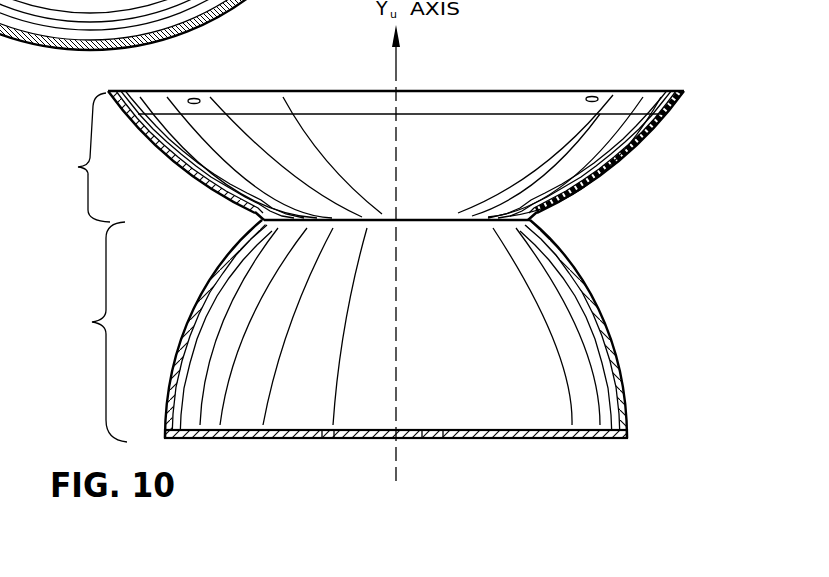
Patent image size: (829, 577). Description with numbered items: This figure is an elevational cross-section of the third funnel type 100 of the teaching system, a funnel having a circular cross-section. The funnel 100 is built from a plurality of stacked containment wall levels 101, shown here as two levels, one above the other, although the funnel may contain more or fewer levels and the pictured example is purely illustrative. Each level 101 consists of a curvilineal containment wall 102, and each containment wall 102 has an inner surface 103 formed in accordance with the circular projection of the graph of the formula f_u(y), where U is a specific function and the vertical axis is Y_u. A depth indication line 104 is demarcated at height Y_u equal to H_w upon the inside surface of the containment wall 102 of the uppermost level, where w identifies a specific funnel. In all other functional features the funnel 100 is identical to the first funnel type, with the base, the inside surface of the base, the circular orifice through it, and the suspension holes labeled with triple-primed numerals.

The third funnel type 100 is at (360, 85).
The containment wall level 101 is at (86, 267).
The curvilineal containment wall 102 is at (647, 133).
The inner surface 103 is at (228, 185).
The depth indication line 104 is at (462, 116).